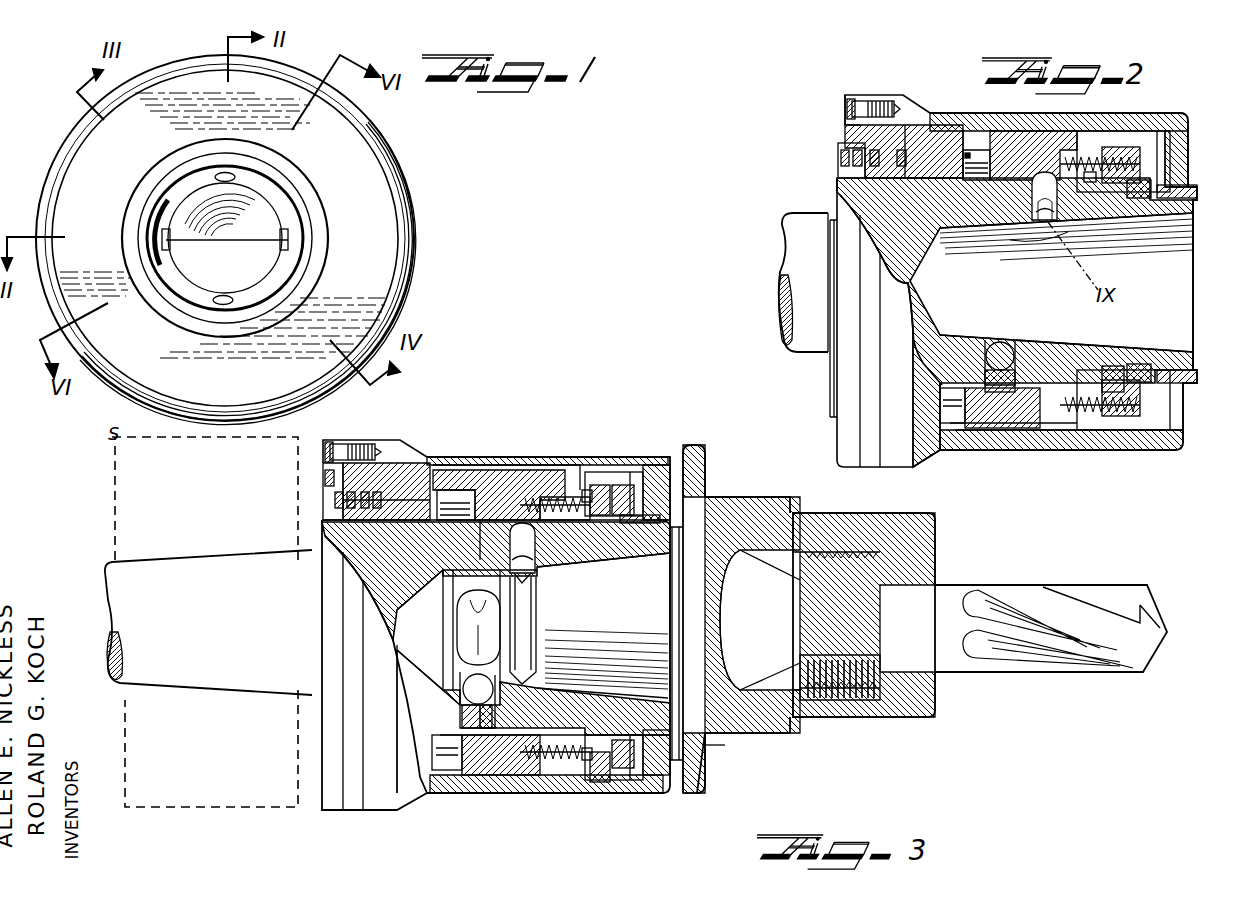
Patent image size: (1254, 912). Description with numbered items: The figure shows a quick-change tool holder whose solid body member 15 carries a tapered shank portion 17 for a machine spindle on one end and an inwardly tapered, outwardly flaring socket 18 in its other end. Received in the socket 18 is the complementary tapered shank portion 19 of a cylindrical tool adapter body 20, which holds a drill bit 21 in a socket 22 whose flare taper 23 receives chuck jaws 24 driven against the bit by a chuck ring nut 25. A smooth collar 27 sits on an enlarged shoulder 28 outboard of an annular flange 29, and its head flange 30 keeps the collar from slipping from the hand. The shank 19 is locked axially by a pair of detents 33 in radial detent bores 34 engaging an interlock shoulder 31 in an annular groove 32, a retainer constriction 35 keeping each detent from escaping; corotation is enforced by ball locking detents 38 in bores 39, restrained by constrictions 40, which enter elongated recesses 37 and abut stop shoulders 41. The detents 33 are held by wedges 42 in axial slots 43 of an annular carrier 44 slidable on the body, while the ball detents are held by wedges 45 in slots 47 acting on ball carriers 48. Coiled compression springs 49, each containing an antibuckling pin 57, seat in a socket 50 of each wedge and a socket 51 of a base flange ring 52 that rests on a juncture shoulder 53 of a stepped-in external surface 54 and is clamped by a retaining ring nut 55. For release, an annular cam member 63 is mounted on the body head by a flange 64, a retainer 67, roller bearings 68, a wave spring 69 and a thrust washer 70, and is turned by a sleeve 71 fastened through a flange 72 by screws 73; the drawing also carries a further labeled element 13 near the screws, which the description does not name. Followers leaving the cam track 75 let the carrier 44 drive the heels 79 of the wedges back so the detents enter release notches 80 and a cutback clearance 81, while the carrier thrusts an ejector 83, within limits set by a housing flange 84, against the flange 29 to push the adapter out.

In FIG. 3, the screw head 13 is at (335, 445).
In FIG. 1, the body member 15 is at (305, 240).
In FIG. 2, the body member 15 is at (860, 203).
In FIG. 3, the body member 15 is at (325, 540).
In FIG. 2, the shank portion 17 is at (800, 265).
In FIG. 3, the shank portion 17 is at (208, 636).
In FIG. 1, the socket 18 is at (278, 270).
In FIG. 2, the socket 18 is at (1170, 281).
In FIG. 3, the socket 18 is at (606, 562).
In FIG. 3, the shank portion 19 is at (642, 636).
In FIG. 3, the tool adapter body 20 is at (762, 522).
In FIG. 3, the drill bit 21 is at (948, 595).
In FIG. 3, the socket 22 is at (757, 586).
In FIG. 3, the flare taper 23 is at (838, 582).
In FIG. 3, the chuck jaws 24 is at (882, 668).
In FIG. 3, the chuck ring nut 25 is at (912, 540).
In FIG. 3, the collar 27 is at (698, 505).
In FIG. 3, the shoulder 28 is at (703, 745).
In FIG. 3, the flange 29 is at (678, 590).
In FIG. 3, the head flange 30 is at (692, 800).
In FIG. 3, the interlock shoulder 31 is at (522, 592).
In FIG. 3, the annular groove 32 is at (535, 615).
In FIG. 1, the detents 33 is at (207, 171).
In FIG. 2, the detents 33 is at (1045, 172).
In FIG. 3, the detents 33 is at (510, 546).
In FIG. 2, the detent bores 34 is at (1046, 225).
In FIG. 3, the detent bores 34 is at (538, 567).
In FIG. 2, the retainer constriction 35 is at (1015, 235).
In FIG. 3, the recesses 37 is at (445, 630).
In FIG. 1, the locking detents 38 is at (283, 242).
In FIG. 2, the locking detents 38 is at (1012, 354).
In FIG. 3, the locking detents 38 is at (475, 700).
In FIG. 2, the detent bores 39 is at (990, 355).
In FIG. 3, the detent bores 39 is at (465, 705).
In FIG. 2, the constrictions 40 is at (990, 348).
In FIG. 3, the constrictions 40 is at (470, 688).
In FIG. 3, the stop shoulders 41 is at (478, 627).
In FIG. 2, the wedges 42 is at (1070, 140).
In FIG. 3, the wedges 42 is at (470, 478).
In FIG. 2, the axial slots 43 is at (980, 160).
In FIG. 3, the axial slots 43 is at (440, 492).
In FIG. 2, the annular carrier 44 is at (1055, 440).
In FIG. 3, the annular carrier 44 is at (520, 475).
In FIG. 2, the wedges 45 is at (1020, 405).
In FIG. 3, the wedges 45 is at (535, 772).
In FIG. 2, the axially extending slots 47 is at (955, 400).
In FIG. 3, the axially extending slots 47 is at (470, 772).
In FIG. 2, the ball carriers 48 is at (1015, 385).
In FIG. 3, the ball carriers 48 is at (480, 730).
In FIG. 2, the coiled compression springs 49 is at (1125, 150).
In FIG. 3, the coiled compression springs 49 is at (578, 496).
In FIG. 3, the socket 50 is at (545, 497).
In FIG. 3, the socket 51 is at (615, 782).
In FIG. 2, the base flange ring 52 is at (1135, 375).
In FIG. 3, the base flange ring 52 is at (640, 792).
In FIG. 3, the juncture shoulder 53 is at (590, 725).
In FIG. 2, the stepped-in external surface 54 is at (1112, 380).
In FIG. 3, the stepped-in external surface 54 is at (612, 482).
In FIG. 2, the retaining ring nut 55 is at (1196, 193).
In FIG. 3, the retaining ring nut 55 is at (632, 527).
In FIG. 2, the antibuckling pin 57 is at (1098, 185).
In FIG. 3, the antibuckling pin 57 is at (590, 494).
In FIG. 2, the cam member 63 is at (905, 125).
In FIG. 3, the cam member 63 is at (398, 465).
In FIG. 3, the flange 64 is at (330, 482).
In FIG. 2, the retainer 67 is at (852, 95).
In FIG. 3, the retainer 67 is at (333, 494).
In FIG. 2, the roller bearings 68 is at (905, 180).
In FIG. 3, the roller bearings 68 is at (377, 520).
In FIG. 2, the wave spring 69 is at (845, 170).
In FIG. 3, the wave spring 69 is at (338, 512).
In FIG. 2, the thrust washer 70 is at (843, 160).
In FIG. 3, the thrust washer 70 is at (340, 502).
In FIG. 1, the sleeve 71 is at (392, 190).
In FIG. 2, the sleeve 71 is at (1140, 120).
In FIG. 3, the sleeve 71 is at (530, 790).
In FIG. 2, the flange 72 is at (880, 100).
In FIG. 3, the flange 72 is at (362, 445).
In FIG. 2, the screws 73 is at (848, 110).
In FIG. 2, the cam track 75 is at (940, 150).
In FIG. 2, the heels 79 is at (1105, 155).
In FIG. 3, the heels 79 is at (552, 490).
In FIG. 3, the release notches 80 is at (465, 530).
In FIG. 2, the cutback clearance 81 is at (1000, 420).
In FIG. 3, the cutback clearance 81 is at (470, 790).
In FIG. 1, the ejector 83 is at (318, 257).
In FIG. 2, the ejector 83 is at (1172, 165).
In FIG. 3, the ejector 83 is at (637, 472).
In FIG. 1, the housing flange 84 is at (360, 150).
In FIG. 2, the housing flange 84 is at (1178, 150).
In FIG. 3, the housing flange 84 is at (660, 470).